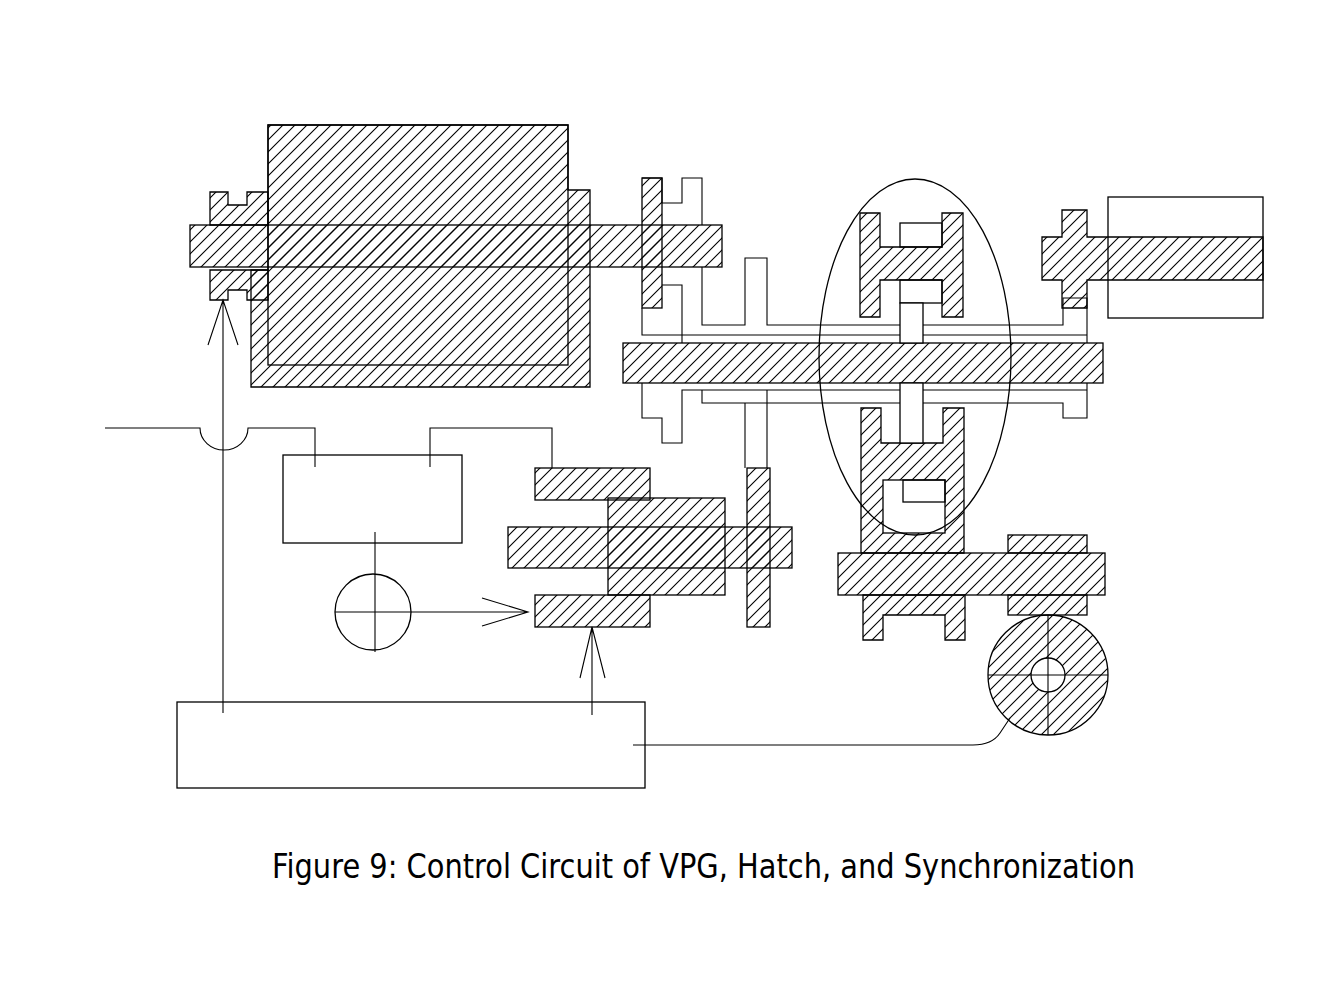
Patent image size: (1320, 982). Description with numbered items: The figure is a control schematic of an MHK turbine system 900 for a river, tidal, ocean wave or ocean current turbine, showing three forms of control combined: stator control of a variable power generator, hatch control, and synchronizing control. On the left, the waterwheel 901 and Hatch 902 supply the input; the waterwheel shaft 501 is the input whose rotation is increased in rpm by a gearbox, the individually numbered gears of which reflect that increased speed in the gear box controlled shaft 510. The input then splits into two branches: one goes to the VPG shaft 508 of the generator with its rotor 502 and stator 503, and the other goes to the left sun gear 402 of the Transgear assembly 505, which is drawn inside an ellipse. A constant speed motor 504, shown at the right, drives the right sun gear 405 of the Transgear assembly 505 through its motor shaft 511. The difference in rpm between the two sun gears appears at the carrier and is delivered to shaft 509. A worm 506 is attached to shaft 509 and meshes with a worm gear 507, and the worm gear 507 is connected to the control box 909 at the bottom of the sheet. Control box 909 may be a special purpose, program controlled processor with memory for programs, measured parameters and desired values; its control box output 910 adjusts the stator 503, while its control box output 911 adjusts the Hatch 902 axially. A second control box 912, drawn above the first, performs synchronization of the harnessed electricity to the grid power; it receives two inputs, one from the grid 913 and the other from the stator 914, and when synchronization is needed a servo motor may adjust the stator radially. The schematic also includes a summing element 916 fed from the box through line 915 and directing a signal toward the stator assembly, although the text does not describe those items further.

The MHK turbine system 900 is at (382, 93).
The waterwheel 901 is at (547, 148).
The Hatch 902 is at (240, 192).
The waterwheel shaft 501 is at (680, 250).
The rotor 502 is at (690, 595).
The stator 503 is at (565, 614).
The constant speed motor 504 is at (1153, 210).
The Transgear assembly 505 is at (913, 178).
The worm 506 is at (1060, 535).
The worm gear 507 is at (1105, 650).
The VPG shaft 508 is at (792, 548).
The shaft 509 is at (1093, 577).
The gear box controlled shaft 510 is at (1100, 355).
The motor shaft 511 is at (1213, 262).
The left sun gear 402 is at (892, 317).
The right sun gear 405 is at (930, 317).
The control box 909 is at (607, 788).
The control box output 910 is at (591, 689).
The control box output 911 is at (235, 527).
The control box 912 is at (283, 499).
The grid 913 is at (329, 483).
The stator 914 is at (418, 483).
The sensor 915 is at (384, 575).
The comparator 916 is at (357, 600).